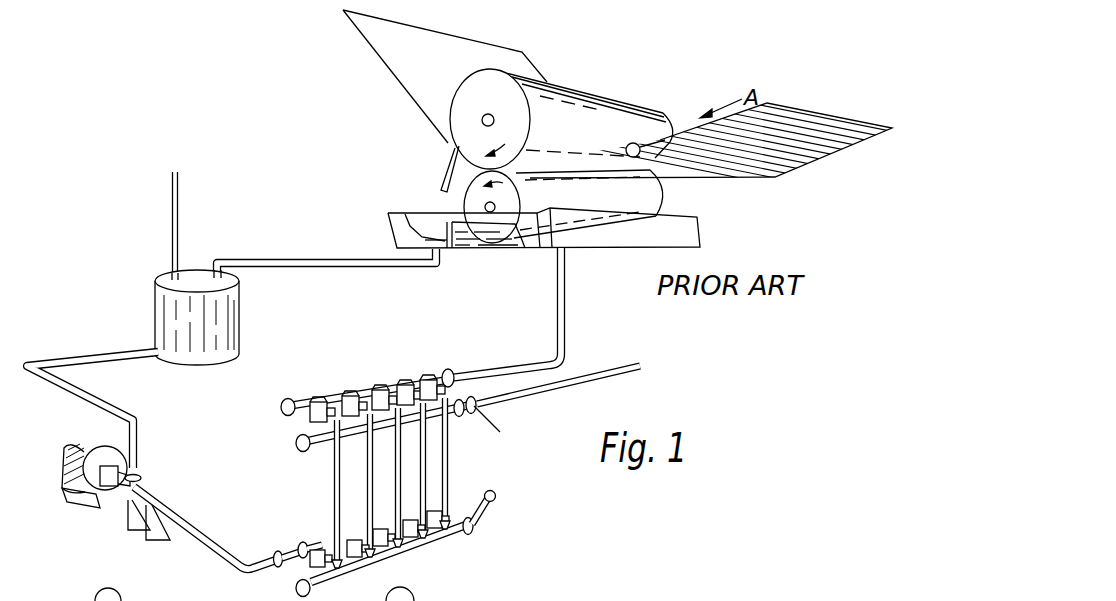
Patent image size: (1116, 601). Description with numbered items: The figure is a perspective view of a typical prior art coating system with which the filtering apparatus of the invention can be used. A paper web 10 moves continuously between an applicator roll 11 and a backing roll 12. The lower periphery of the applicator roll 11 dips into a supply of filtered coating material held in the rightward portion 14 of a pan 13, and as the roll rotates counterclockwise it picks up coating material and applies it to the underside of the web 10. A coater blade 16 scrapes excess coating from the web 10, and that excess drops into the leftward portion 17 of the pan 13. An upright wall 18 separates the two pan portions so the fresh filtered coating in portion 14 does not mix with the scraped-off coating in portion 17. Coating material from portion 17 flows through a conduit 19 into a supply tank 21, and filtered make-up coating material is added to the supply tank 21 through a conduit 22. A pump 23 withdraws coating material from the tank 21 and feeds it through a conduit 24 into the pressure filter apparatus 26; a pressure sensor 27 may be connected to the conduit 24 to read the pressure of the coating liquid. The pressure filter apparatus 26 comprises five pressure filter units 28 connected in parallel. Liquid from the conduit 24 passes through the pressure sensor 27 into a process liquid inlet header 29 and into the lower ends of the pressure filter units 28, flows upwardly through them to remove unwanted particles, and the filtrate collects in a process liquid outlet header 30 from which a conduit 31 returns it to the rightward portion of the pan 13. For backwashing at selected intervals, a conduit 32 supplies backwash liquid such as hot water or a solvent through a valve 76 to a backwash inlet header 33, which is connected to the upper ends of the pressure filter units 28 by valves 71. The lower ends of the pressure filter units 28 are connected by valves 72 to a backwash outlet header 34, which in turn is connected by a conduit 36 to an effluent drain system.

The paper web 10 is at (518, 64).
The applicator roll 11 is at (655, 202).
The backing roll 12 is at (658, 120).
The pan 13 is at (700, 228).
The rightward portion of the pan 14 is at (465, 240).
The coater blade 16 is at (452, 160).
The leftward portion of the pan 17 is at (418, 218).
The upright wall 18 is at (450, 254).
The conduit 19 is at (300, 268).
The supply tank 21 is at (239, 321).
The conduit 22 is at (170, 178).
The pump 23 is at (146, 465).
The conduit 24 is at (218, 553).
The pressure filter apparatus 26 is at (474, 461).
The pressure sensor 27 is at (280, 540).
The pressure filter units 28 is at (366, 460).
The process liquid inlet header 29 is at (312, 542).
The process liquid outlet header 30 is at (302, 400).
The conduit 31 is at (521, 362).
The conduit 32 is at (588, 373).
The backwash inlet header 33 is at (305, 458).
The backwash outlet header 34 is at (380, 557).
The conduit 36 is at (484, 518).
The valves 71 is at (320, 398).
The valves 72 is at (340, 516).
The valve 76 is at (481, 430).